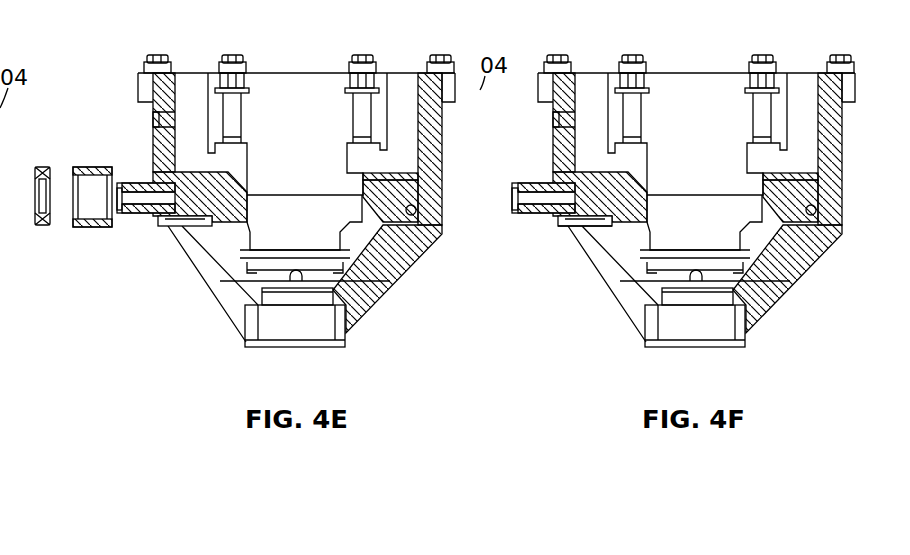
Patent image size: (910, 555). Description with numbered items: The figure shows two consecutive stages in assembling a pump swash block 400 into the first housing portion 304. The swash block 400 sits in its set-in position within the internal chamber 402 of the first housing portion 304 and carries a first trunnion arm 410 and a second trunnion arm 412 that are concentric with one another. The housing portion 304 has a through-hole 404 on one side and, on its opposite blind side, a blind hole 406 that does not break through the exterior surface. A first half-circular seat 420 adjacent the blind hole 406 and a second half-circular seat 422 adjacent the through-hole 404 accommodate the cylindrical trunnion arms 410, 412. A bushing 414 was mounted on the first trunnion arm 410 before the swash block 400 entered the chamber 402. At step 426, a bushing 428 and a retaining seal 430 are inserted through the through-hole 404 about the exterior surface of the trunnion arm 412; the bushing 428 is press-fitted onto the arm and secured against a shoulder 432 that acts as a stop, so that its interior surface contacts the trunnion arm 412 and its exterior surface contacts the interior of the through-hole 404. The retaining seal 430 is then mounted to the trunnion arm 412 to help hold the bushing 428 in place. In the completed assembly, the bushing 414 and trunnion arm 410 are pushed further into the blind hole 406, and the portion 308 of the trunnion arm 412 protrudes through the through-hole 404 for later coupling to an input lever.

In FIG. 4E, the first housing portion 304 is at (446, 128).
In FIG. 4F, the first housing portion 304 is at (872, 91).
In FIG. 4E, the portion of trunnion arm 308 is at (137, 212).
In FIG. 4F, the portion of trunnion arm 308 is at (533, 229).
In FIG. 4E, the swash block 400 is at (318, 190).
In FIG. 4F, the swash block 400 is at (705, 154).
In FIG. 4E, the internal chamber 402 is at (398, 93).
In FIG. 4F, the internal chamber 402 is at (696, 121).
In FIG. 4E, the through-hole 404 is at (150, 172).
In FIG. 4F, the through-hole 404 is at (560, 246).
In FIG. 4F, the blind hole 406 is at (756, 201).
In FIG. 4E, the first trunnion arm 410 is at (368, 172).
In FIG. 4F, the first trunnion arm 410 is at (757, 108).
In FIG. 4E, the second trunnion arm 412 is at (183, 181).
In FIG. 4F, the second trunnion arm 412 is at (537, 132).
In FIG. 4E, the bushing 414 is at (393, 168).
In FIG. 4F, the bushing 414 is at (699, 115).
In FIG. 4E, the first half-circular seat 420 is at (443, 234).
In FIG. 4F, the first half-circular seat 420 is at (797, 279).
In FIG. 4E, the second half-circular seat 422 is at (183, 215).
In FIG. 4F, the second half-circular seat 422 is at (569, 263).
In FIG. 4E, the step 426 is at (295, 333).
In FIG. 4E, the bushing 428 is at (95, 162).
In FIG. 4F, the bushing 428 is at (605, 124).
In FIG. 4E, the retaining seal 430 is at (43, 230).
In FIG. 4F, the retaining seal 430 is at (585, 279).
In FIG. 4E, the shoulder 432 is at (203, 168).